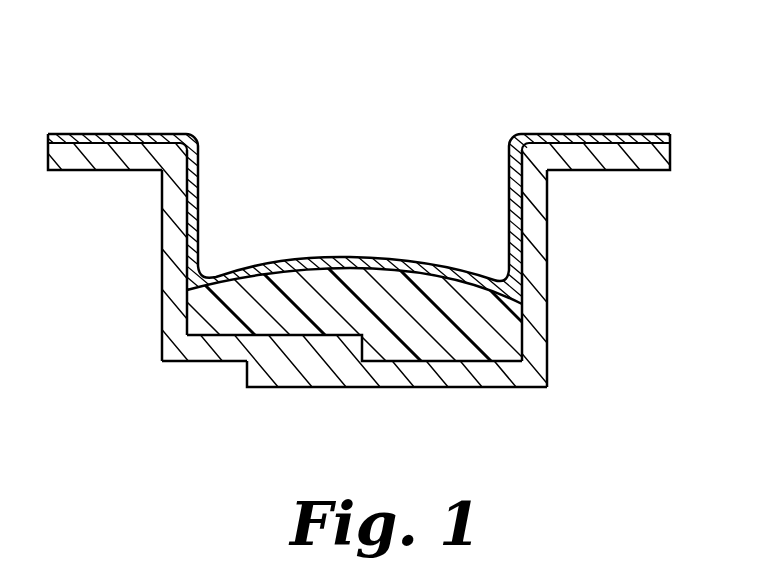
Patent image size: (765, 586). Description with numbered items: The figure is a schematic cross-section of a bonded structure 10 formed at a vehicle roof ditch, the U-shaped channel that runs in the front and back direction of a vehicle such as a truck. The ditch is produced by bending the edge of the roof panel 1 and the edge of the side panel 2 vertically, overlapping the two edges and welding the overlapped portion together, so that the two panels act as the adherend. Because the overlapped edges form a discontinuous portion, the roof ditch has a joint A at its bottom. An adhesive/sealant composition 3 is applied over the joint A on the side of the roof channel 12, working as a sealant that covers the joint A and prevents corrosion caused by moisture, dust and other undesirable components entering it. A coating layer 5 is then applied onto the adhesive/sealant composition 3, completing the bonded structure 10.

The bonded structure 10 is at (183, 90).
The roof panel 1 is at (162, 318).
The side panel 2 is at (538, 298).
The adhesive/sealant composition 3 is at (485, 337).
The coating layer 5 is at (575, 137).
The roof channel 12 is at (367, 223).
The joint A is at (366, 378).